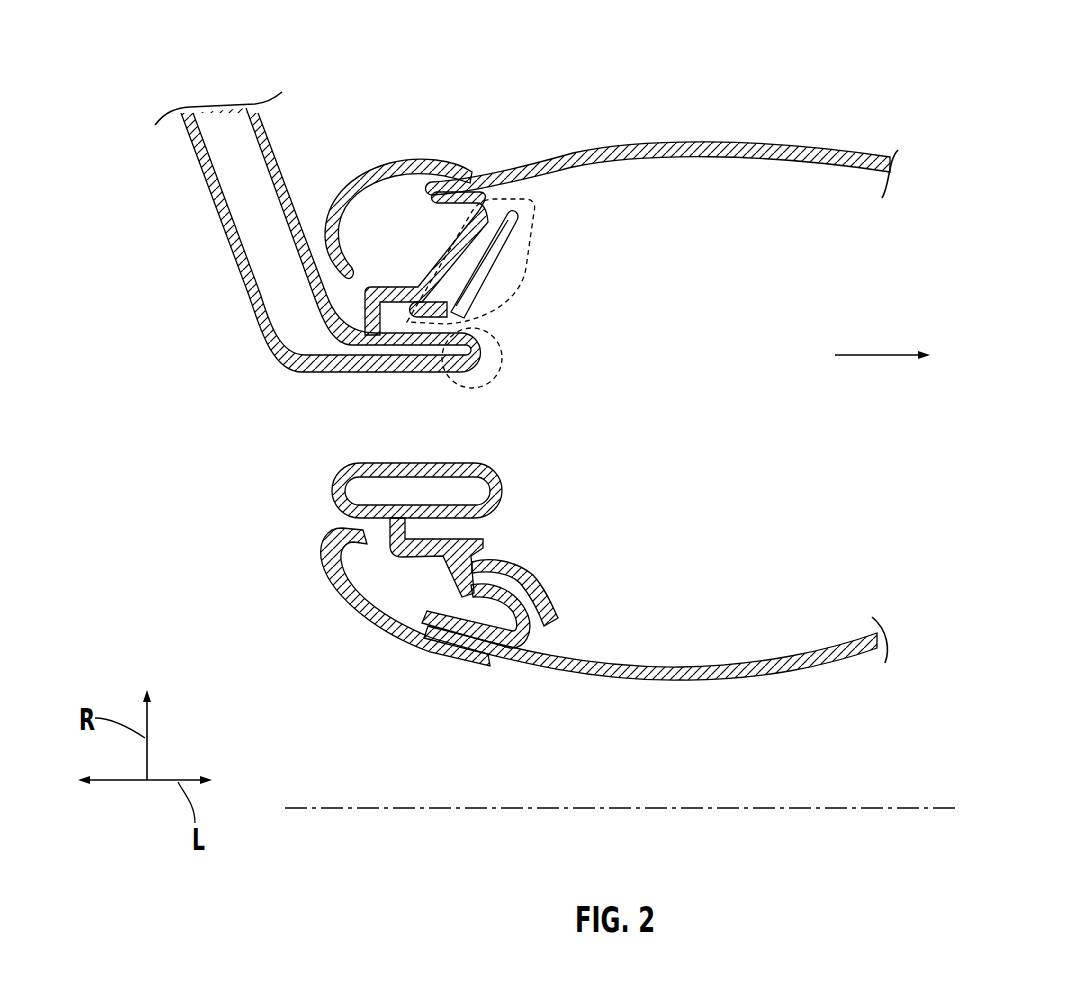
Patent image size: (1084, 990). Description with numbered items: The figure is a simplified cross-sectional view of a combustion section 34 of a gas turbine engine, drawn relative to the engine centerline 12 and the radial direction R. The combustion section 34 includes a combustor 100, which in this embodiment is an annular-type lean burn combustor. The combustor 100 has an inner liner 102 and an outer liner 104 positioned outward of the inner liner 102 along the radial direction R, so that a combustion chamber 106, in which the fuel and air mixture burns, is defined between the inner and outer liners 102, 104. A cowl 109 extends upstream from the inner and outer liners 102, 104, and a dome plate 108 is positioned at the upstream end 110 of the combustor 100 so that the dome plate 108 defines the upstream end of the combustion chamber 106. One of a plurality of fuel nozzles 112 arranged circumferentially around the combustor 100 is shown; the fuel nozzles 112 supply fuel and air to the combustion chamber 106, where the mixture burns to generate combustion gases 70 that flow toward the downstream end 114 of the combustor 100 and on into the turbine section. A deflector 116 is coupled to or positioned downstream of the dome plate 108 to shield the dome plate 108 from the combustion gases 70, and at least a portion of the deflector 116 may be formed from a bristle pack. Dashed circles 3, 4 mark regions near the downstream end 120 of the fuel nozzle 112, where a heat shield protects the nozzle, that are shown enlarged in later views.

The combustion section 34 is at (101, 71).
The combustor 100 is at (587, 90).
The inner liner 102 is at (713, 672).
The outer liner 104 is at (748, 142).
The combustion chamber 106 is at (740, 434).
The dome plate 108 is at (453, 257).
The cowl 109 is at (368, 176).
The upstream end 110 is at (298, 605).
The fuel nozzle 112 is at (343, 467).
The downstream end 114 is at (868, 124).
The deflector 116 is at (505, 242).
The downstream end of the fuel nozzle 120 is at (522, 413).
The longitudinal centerline 12 is at (325, 808).
The combustion gases 70 is at (862, 357).
The detail region of FIG. 3 is at (499, 341).
The detail region of FIG. 4 is at (540, 206).